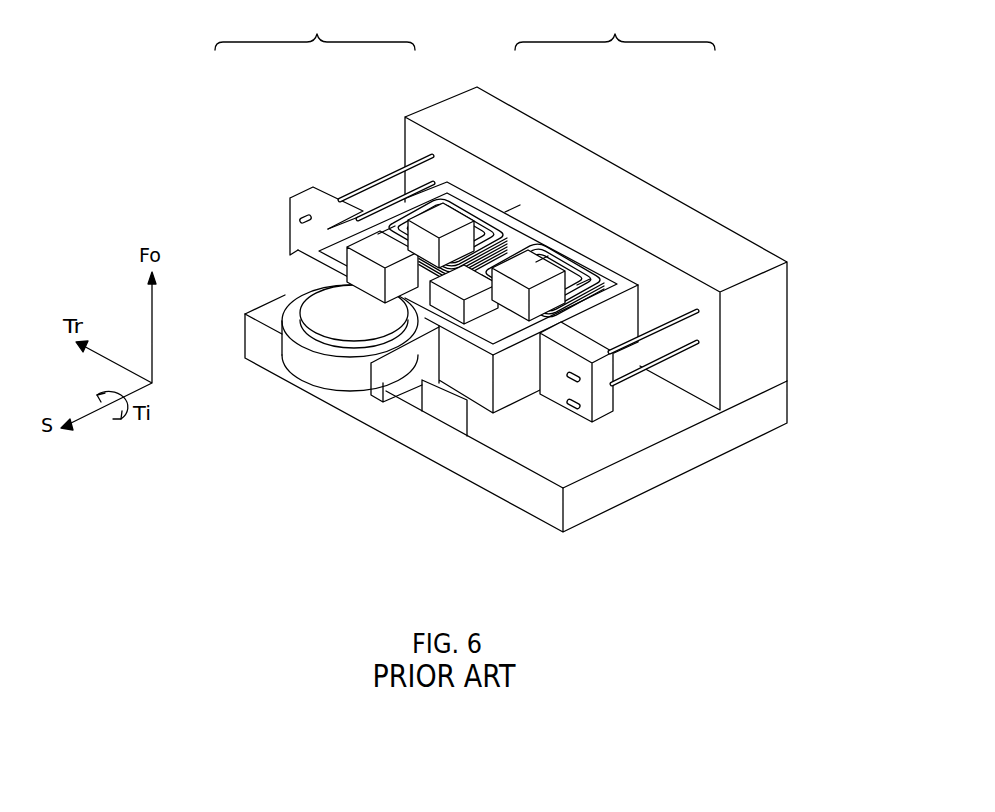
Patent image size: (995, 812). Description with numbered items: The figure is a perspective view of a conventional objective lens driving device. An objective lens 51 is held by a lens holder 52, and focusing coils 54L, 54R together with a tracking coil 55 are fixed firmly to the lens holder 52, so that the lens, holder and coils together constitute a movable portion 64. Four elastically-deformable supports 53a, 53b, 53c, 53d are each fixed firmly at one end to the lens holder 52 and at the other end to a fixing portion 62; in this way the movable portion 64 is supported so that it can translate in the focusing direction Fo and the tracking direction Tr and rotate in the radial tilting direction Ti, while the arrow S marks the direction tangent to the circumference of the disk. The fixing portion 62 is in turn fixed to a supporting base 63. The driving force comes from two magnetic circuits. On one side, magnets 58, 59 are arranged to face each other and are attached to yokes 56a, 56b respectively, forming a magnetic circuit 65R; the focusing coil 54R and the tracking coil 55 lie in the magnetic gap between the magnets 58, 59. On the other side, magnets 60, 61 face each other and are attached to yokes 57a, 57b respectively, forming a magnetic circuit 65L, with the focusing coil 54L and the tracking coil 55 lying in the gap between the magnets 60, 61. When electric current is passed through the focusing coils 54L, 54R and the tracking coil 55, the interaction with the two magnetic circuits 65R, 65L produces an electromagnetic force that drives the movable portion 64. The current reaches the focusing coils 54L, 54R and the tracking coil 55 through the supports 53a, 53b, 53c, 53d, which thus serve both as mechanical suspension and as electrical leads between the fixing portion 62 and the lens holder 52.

The objective lens 51 is at (333, 307).
The lens holder 52 is at (395, 377).
The elastically-deformable support 53a is at (688, 318).
The elastically-deformable support 53b is at (640, 372).
The elastically-deformable support 53c is at (377, 178).
The elastically-deformable support 53d is at (303, 233).
The focusing coil 54L is at (462, 250).
The focusing coil 54R is at (598, 248).
The tracking coil 55 is at (446, 302).
The yoke 56a is at (577, 285).
The yoke 56b is at (508, 214).
The yoke 57a is at (470, 294).
The yoke 57b is at (367, 247).
The magnet 58 is at (537, 263).
The magnet 59 is at (523, 268).
The magnet 60 is at (427, 217).
The magnet 61 is at (380, 236).
The fixing portion 62 is at (760, 326).
The supporting base 63 is at (518, 487).
The movable portion 64 is at (302, 359).
The magnetic circuit 65L is at (315, 30).
The magnetic circuit 65R is at (615, 30).